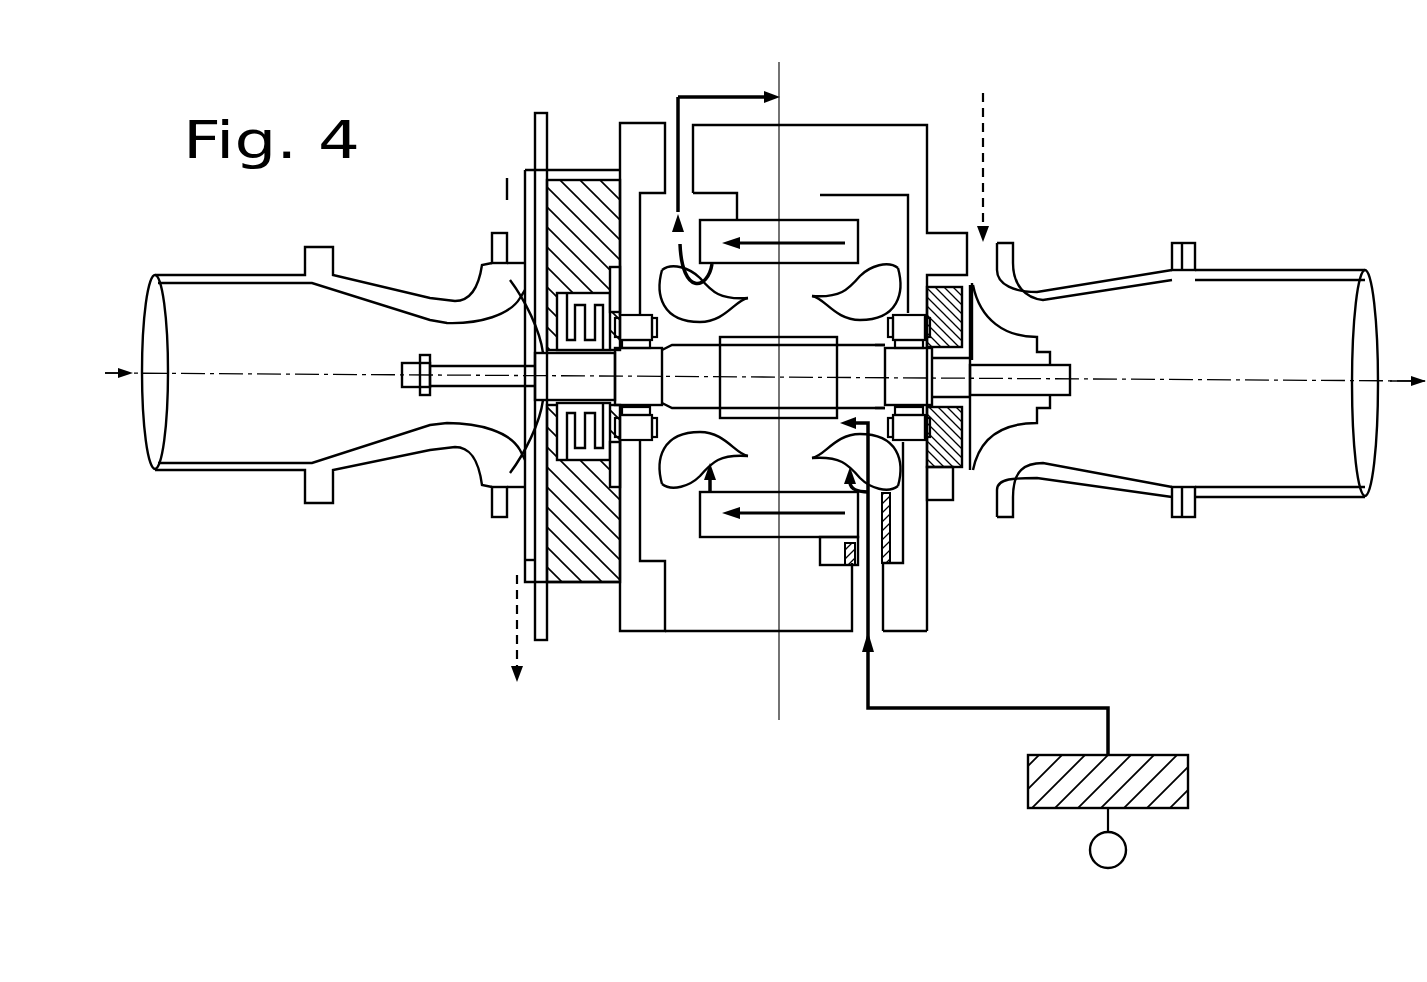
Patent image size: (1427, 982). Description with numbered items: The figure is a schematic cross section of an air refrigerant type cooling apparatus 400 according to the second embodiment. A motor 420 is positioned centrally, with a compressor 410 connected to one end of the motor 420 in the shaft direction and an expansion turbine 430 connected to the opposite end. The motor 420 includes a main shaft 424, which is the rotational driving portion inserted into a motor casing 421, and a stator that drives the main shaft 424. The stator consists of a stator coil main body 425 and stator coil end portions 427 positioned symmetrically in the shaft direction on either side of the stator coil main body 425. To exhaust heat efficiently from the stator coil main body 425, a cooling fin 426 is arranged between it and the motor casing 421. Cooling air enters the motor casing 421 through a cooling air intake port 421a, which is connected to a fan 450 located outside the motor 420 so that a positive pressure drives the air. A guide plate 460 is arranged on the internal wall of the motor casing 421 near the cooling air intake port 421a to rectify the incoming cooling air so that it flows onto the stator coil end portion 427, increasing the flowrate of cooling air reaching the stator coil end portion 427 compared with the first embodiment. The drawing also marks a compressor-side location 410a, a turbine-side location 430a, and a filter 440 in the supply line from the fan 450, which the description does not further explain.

The air refrigerant type cooling apparatus 400 is at (1173, 43).
The compressor 410 is at (540, 372).
The compressor outlet 410a is at (527, 565).
The motor 420 is at (645, 96).
The motor casing 421 is at (735, 162).
The cooling air intake port 421a is at (877, 615).
The main shaft 424 is at (552, 388).
The stator coil main body 425 is at (810, 455).
The cooling fin 426 is at (740, 252).
The stator coil end portion 427 is at (870, 435).
The expansion turbine 430 is at (1013, 410).
The expansion turbine inlet 430a is at (988, 262).
The filter 440 is at (1188, 780).
The fan 450 is at (1127, 850).
The guide plate 460 is at (885, 563).